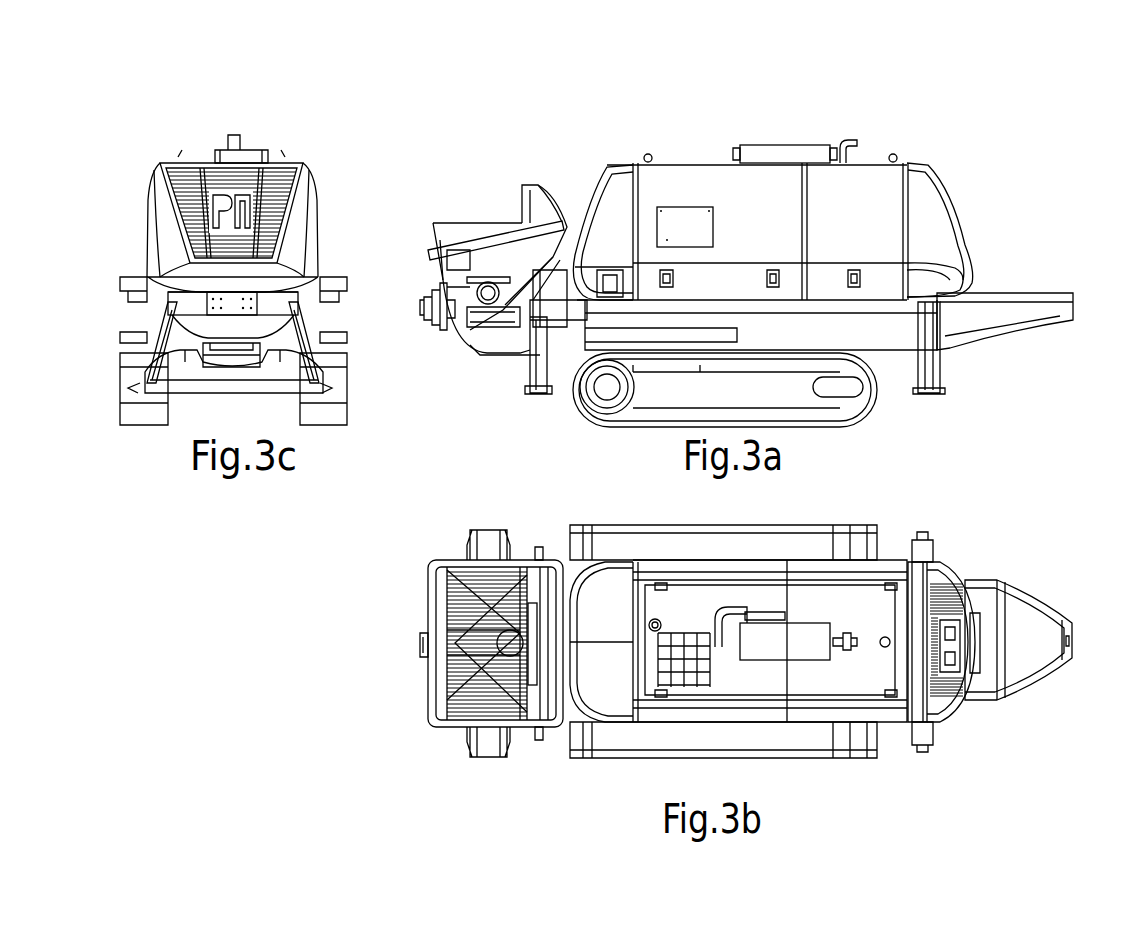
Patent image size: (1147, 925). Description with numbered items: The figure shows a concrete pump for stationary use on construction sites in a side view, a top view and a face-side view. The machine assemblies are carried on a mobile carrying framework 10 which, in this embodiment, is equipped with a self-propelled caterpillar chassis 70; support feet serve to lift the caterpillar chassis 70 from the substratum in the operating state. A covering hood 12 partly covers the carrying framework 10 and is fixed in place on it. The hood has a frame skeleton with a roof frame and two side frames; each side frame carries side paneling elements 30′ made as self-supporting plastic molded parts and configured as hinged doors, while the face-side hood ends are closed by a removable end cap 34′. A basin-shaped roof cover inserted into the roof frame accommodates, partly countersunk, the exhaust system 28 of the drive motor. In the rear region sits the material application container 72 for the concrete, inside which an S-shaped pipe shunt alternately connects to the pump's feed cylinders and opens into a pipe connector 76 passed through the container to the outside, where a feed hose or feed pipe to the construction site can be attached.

In FIG. 3C, the carrying framework 10 is at (280, 303).
In FIG. 3A, the carrying framework 10 is at (893, 330).
In FIG. 3B, the carrying framework 10 is at (980, 603).
In FIG. 3C, the covering hood 12 is at (307, 173).
In FIG. 3A, the covering hood 12 is at (853, 203).
In FIG. 3B, the covering hood 12 is at (857, 583).
In FIG. 3A, the exhaust system 28 is at (790, 152).
In FIG. 3B, the exhaust system 28 is at (797, 650).
In FIG. 3A, the side paneling element 30′ is at (740, 217).
In FIG. 3A, the end cap 34′ is at (605, 197).
In FIG. 3B, the end cap 34′ is at (598, 610).
In FIG. 3C, the caterpillar chassis 70 is at (323, 397).
In FIG. 3A, the caterpillar chassis 70 is at (843, 420).
In FIG. 3B, the caterpillar chassis 70 is at (830, 543).
In FIG. 3A, the material application container 72 is at (492, 257).
In FIG. 3B, the material application container 72 is at (447, 567).
In FIG. 3A, the pipe connector 76 is at (420, 307).
In FIG. 3B, the pipe connector 76 is at (807, 603).